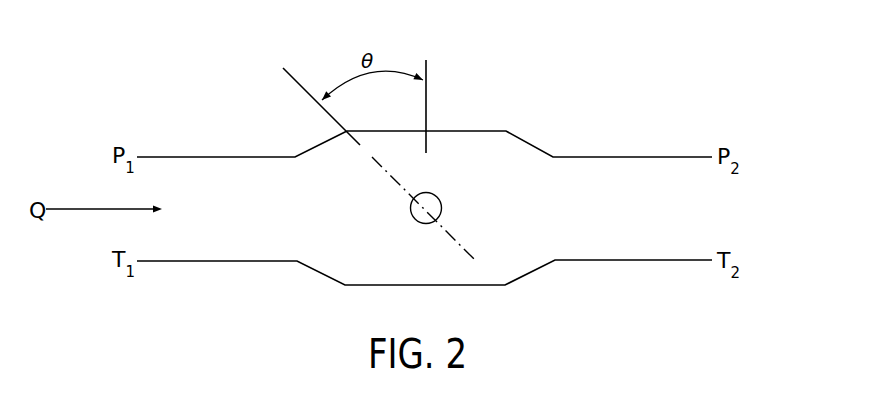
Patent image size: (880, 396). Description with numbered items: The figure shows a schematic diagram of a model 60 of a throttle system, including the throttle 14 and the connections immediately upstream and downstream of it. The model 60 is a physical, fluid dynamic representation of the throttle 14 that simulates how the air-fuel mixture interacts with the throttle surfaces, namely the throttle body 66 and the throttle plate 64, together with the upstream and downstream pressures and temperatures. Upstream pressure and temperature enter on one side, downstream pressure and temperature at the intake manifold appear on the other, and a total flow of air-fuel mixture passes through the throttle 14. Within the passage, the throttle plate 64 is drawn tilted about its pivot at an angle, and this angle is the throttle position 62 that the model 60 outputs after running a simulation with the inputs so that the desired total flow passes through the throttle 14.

The model 60 is at (655, 68).
The throttle 14 is at (542, 130).
The throttle body 66 is at (215, 157).
The throttle position 62 is at (375, 40).
The throttle plate 64 is at (462, 243).